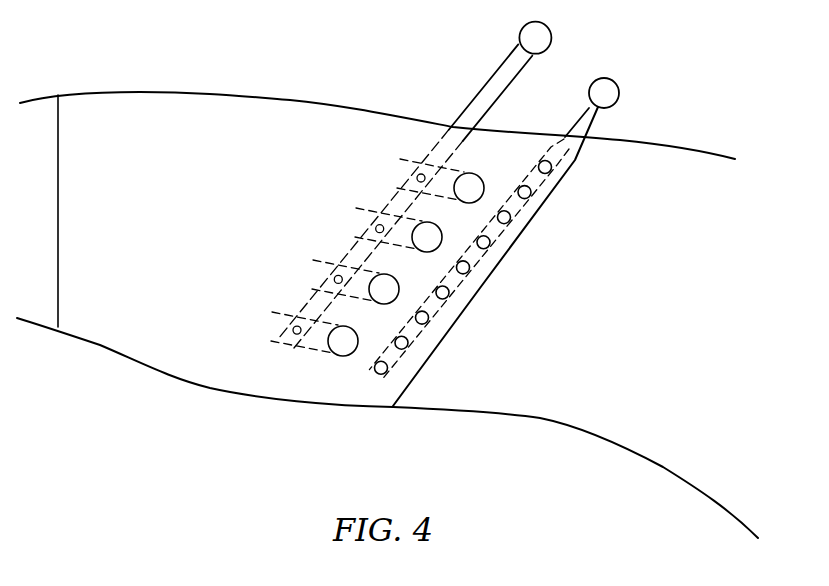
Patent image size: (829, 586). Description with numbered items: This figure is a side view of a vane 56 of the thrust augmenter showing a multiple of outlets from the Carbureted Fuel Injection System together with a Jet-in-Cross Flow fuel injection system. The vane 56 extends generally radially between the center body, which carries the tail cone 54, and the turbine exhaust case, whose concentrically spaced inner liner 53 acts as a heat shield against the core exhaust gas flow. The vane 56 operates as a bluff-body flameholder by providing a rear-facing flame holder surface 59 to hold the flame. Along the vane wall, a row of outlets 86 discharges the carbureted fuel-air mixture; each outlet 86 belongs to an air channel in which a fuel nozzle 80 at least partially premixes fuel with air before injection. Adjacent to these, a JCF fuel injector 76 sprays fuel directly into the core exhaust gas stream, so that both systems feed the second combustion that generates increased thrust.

The inner liner 53 is at (698, 148).
The tail cone 54 is at (663, 467).
The vane 56 is at (300, 157).
The rear-facing flame holder surface 59 is at (483, 290).
The JCF fuel injector 76 is at (509, 217).
The fuel nozzle 80 is at (421, 174).
The outlet 86 is at (473, 187).